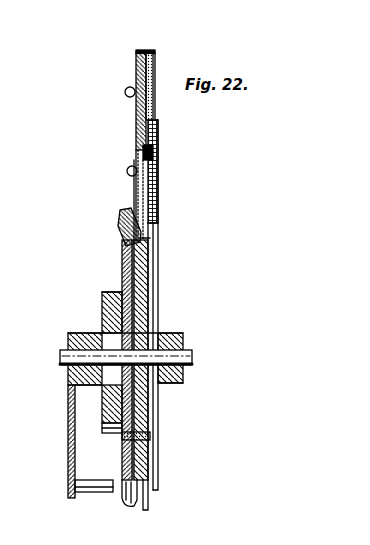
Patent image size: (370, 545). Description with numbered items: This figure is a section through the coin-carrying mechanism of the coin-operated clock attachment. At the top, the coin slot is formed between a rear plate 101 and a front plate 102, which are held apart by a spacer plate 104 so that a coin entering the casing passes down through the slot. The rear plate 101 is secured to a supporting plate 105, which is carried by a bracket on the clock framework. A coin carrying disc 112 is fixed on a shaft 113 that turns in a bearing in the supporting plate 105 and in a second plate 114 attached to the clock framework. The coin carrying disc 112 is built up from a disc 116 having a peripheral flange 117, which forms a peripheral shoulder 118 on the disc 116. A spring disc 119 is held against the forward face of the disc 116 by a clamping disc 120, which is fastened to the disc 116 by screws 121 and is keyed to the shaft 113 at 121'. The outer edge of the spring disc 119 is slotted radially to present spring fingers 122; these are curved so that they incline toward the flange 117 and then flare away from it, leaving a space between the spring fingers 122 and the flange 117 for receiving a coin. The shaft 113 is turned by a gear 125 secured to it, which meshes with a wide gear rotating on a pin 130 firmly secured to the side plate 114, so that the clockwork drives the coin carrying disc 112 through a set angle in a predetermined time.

The rear plate 101 is at (152, 52).
The front plate 102 is at (136, 53).
The spacer plate 104 is at (143, 51).
The supporting plate 105 is at (159, 120).
The coin carrying disc 112 is at (124, 246).
The shaft 113 is at (192, 354).
The plate 114 is at (68, 438).
The disc 116 is at (153, 289).
The peripheral flange 117 is at (158, 224).
The peripheral shoulder 118 is at (150, 238).
The spring disc 119 is at (133, 262).
The disc 120 is at (123, 272).
The screws 121 is at (101, 359).
The key 121' is at (162, 439).
The spring fingers 122 is at (126, 214).
The gear 125 is at (102, 313).
The pin 130 is at (95, 493).